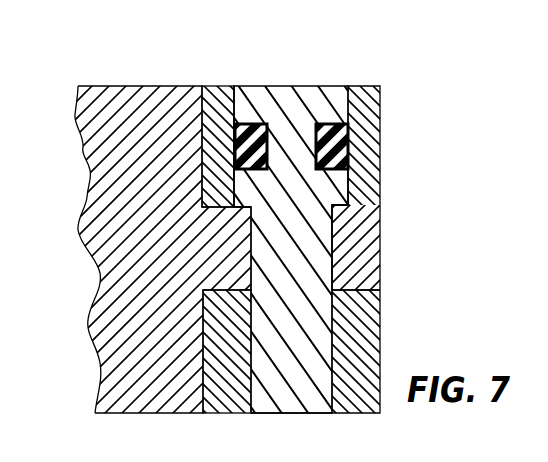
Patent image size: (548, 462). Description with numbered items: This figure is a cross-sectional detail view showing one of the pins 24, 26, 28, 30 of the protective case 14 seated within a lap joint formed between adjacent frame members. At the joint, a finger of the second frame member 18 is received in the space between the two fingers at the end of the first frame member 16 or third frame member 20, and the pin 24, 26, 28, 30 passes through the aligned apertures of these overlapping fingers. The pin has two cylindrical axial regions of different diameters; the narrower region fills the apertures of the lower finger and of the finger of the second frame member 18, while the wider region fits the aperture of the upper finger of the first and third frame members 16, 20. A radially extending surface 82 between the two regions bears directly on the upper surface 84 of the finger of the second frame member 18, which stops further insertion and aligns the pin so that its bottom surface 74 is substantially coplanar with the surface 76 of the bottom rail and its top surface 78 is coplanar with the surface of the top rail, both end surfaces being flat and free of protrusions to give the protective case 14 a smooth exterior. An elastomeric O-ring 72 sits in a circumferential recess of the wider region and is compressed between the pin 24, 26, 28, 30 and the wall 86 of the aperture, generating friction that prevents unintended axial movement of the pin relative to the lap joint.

The protective case 14 is at (274, 231).
The second frame member 18 is at (178, 150).
The first frame member 16 is at (274, 231).
The third frame member 20 is at (220, 86).
The pin 24 is at (274, 231).
The pin 26 is at (274, 231).
The pin 28 is at (274, 231).
The pin 30 is at (336, 102).
The O-ring 72 is at (349, 143).
The bottom surface 74 is at (293, 413).
The surface of the bottom rail 76 is at (229, 413).
The top surface 78 is at (275, 87).
The radially extending surface 82 is at (338, 210).
The upper surface 84 is at (232, 87).
The wall 86 is at (340, 184).